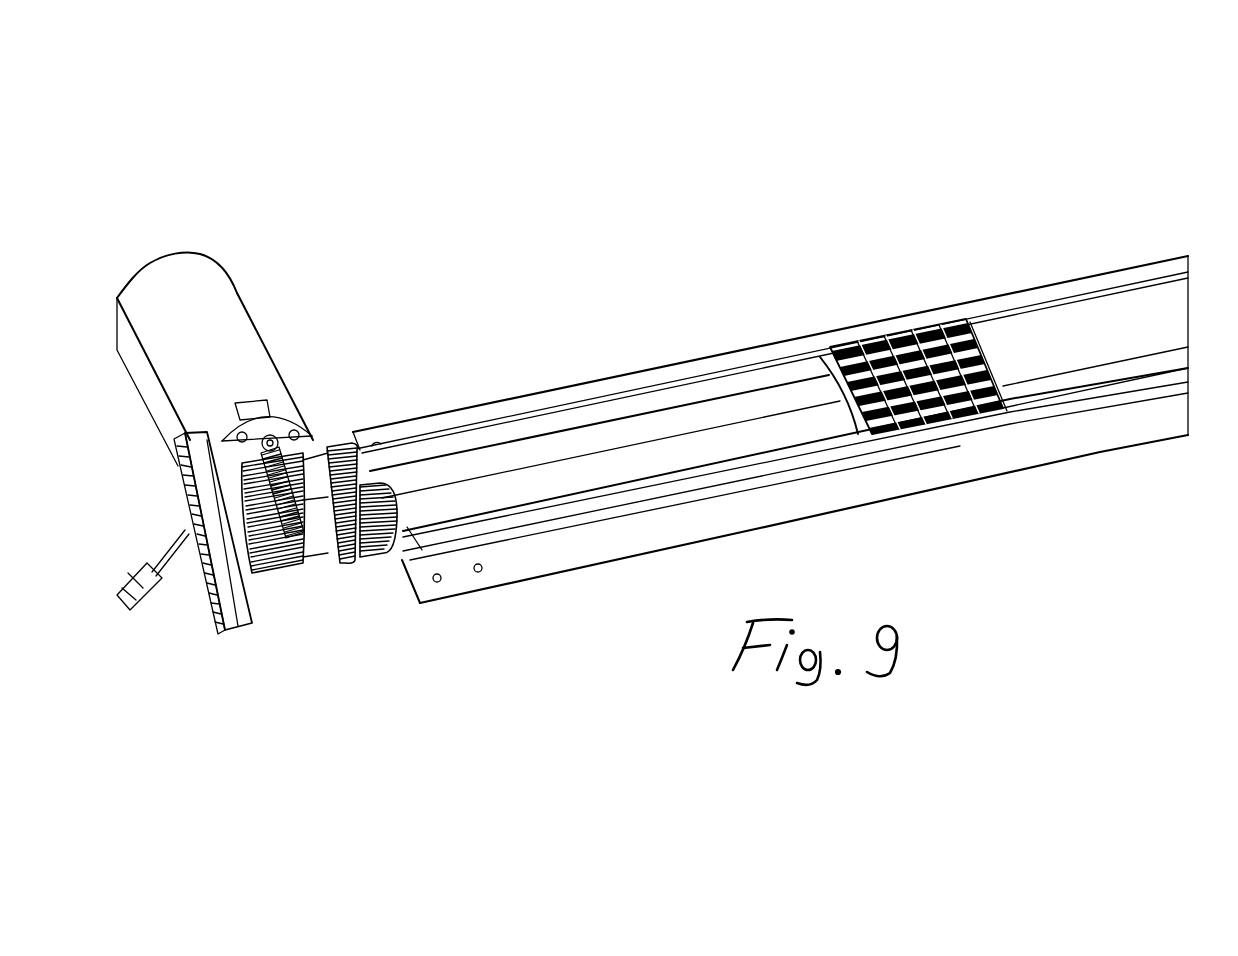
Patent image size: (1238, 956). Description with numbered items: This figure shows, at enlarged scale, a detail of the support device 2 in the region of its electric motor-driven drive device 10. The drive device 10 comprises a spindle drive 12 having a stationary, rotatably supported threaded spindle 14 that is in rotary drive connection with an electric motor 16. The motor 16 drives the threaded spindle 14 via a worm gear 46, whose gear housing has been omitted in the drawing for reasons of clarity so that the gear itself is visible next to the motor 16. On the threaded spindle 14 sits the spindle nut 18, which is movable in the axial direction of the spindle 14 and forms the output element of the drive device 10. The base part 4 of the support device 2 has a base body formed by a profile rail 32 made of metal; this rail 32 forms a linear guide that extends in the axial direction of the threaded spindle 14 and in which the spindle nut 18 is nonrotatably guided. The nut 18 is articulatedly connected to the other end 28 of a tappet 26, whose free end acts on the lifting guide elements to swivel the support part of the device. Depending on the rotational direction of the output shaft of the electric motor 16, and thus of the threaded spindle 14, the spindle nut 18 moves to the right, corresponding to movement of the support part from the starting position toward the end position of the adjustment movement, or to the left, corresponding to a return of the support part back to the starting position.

The support device 2 is at (810, 130).
The base part 4 is at (643, 594).
The electric motor-driven drive device 10 is at (331, 366).
The spindle drive 12 is at (769, 313).
The threaded spindle 14 is at (552, 476).
The electric motor 16 is at (225, 298).
The spindle nut 18 is at (878, 343).
The tappet 26 is at (1127, 303).
The other end of the tappet 28 is at (993, 333).
The profile rail 32 is at (978, 462).
The worm gear 46 is at (283, 610).